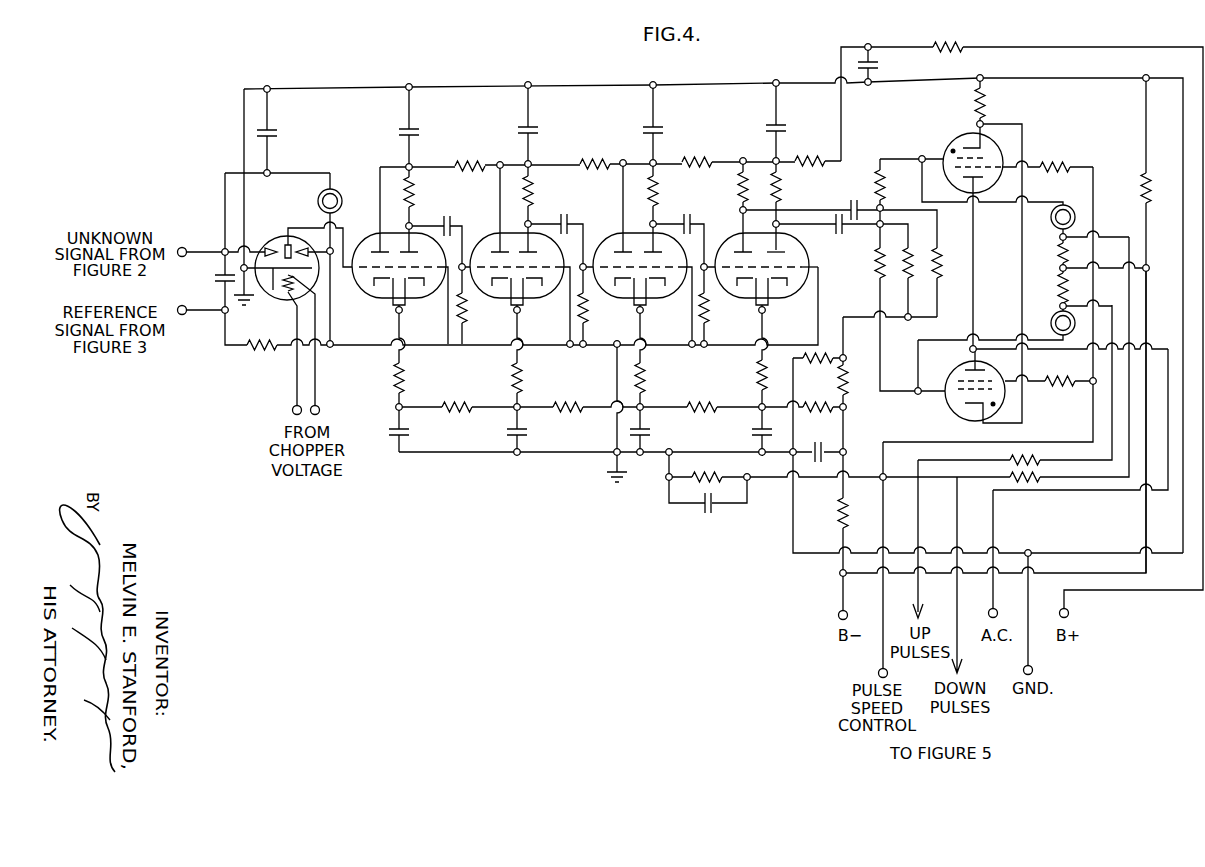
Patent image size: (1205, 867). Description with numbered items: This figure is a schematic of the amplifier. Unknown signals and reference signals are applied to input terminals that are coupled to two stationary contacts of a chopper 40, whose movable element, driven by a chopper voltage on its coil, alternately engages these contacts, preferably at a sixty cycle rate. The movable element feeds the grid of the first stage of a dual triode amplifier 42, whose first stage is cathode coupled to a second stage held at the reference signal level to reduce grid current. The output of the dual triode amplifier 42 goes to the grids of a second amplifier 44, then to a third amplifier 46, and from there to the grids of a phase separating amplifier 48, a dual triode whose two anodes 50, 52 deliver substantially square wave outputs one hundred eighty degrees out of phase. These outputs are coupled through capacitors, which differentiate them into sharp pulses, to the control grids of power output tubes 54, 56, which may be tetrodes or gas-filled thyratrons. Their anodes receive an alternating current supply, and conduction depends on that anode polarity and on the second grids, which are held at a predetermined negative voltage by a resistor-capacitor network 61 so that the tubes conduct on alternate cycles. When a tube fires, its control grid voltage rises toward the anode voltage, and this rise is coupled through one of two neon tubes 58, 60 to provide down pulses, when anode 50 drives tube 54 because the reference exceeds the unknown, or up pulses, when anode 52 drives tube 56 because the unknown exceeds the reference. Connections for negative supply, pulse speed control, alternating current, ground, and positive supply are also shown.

The chopper 40 is at (279, 237).
The dual triode amplifier 42 is at (399, 233).
The second amplifier 44 is at (517, 233).
The third amplifier 46 is at (639, 233).
The phase separating amplifier 48 is at (764, 238).
The anode 50 is at (742, 245).
The anode 52 is at (788, 248).
The power output tube 54 is at (962, 144).
The power output tube 56 is at (954, 379).
The neon tube 58 is at (1068, 207).
The neon tube 60 is at (1055, 319).
The resistor-capacitor network 61 is at (698, 497).